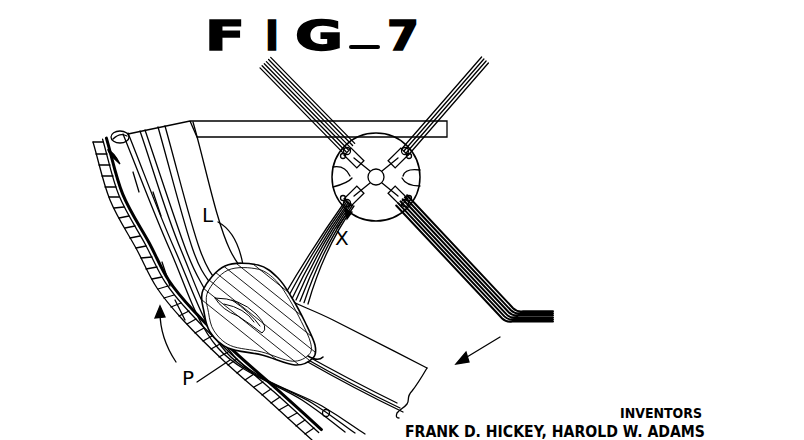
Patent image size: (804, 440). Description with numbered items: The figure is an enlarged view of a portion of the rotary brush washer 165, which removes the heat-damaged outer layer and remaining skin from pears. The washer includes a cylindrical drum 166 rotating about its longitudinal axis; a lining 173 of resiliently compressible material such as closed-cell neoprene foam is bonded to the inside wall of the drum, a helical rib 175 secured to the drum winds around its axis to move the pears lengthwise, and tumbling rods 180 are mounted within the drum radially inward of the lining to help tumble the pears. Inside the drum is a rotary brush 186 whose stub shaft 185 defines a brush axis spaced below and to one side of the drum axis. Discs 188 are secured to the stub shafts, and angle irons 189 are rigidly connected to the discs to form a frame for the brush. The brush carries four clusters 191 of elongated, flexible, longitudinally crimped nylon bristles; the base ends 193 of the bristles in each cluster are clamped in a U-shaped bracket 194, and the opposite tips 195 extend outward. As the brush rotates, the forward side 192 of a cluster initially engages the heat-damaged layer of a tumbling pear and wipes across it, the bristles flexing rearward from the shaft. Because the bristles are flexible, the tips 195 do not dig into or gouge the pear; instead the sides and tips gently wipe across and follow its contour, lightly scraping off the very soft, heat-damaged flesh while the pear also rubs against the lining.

The rotary brush washer 165 is at (118, 212).
The cylindrical drum 166 is at (150, 258).
The lining 173 is at (134, 243).
The helical rib 175 is at (134, 131).
The tumbling rods 180 is at (322, 413).
The stub shaft 185 is at (412, 181).
The rotary brush 186 is at (318, 104).
The discs 188 is at (379, 218).
The angle irons 189 is at (379, 135).
The clusters of bristles 191 is at (263, 73).
The forward side of the cluster 192 is at (300, 252).
The base ends 193 is at (338, 152).
The U-shaped bracket 194 is at (342, 167).
The tips 195 is at (307, 330).